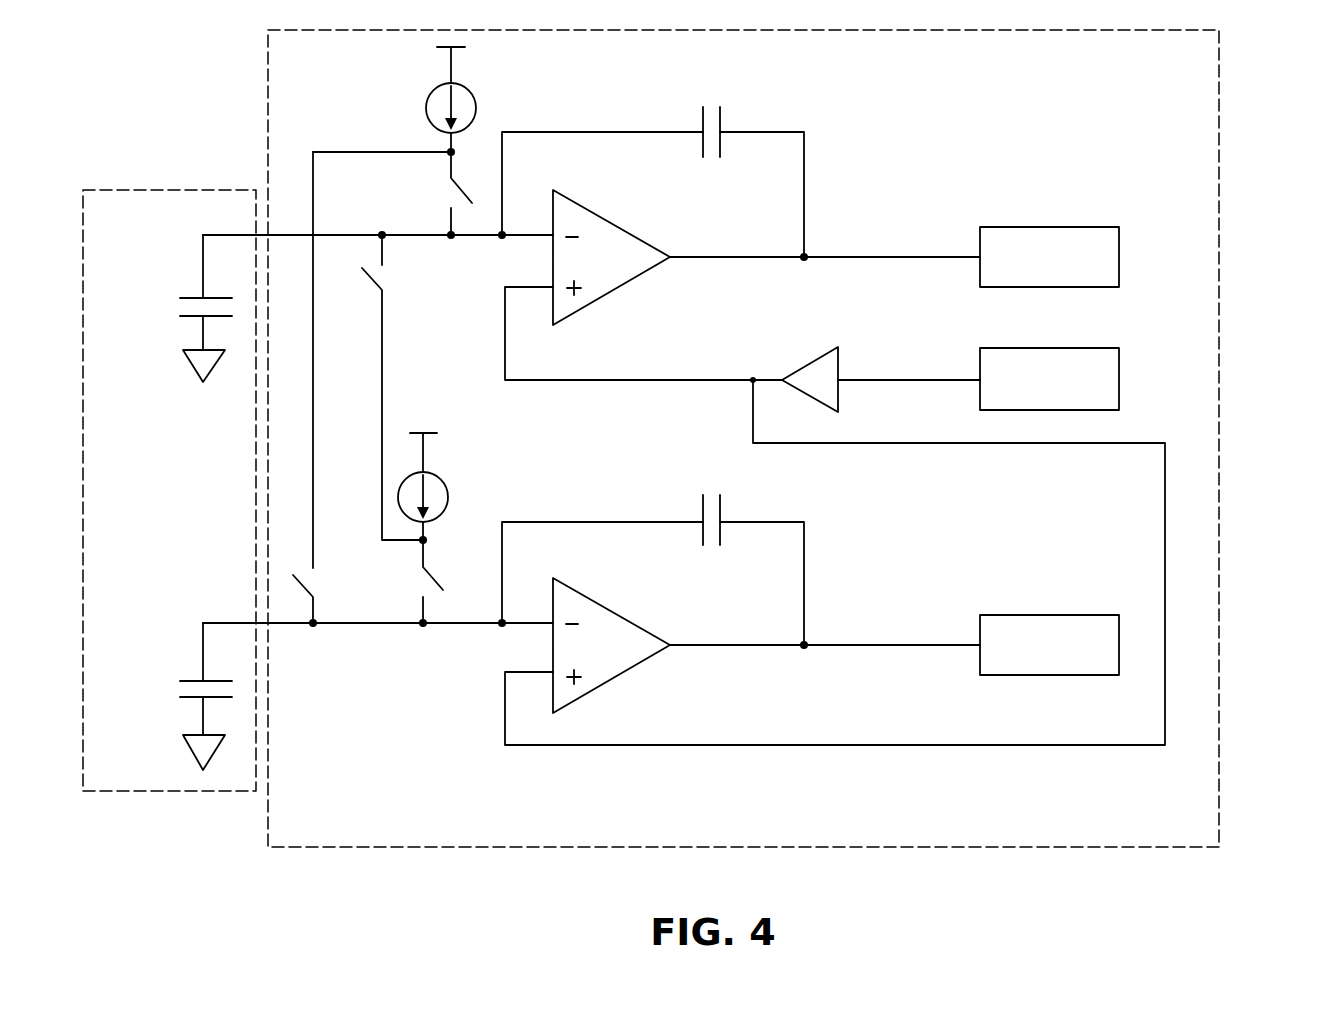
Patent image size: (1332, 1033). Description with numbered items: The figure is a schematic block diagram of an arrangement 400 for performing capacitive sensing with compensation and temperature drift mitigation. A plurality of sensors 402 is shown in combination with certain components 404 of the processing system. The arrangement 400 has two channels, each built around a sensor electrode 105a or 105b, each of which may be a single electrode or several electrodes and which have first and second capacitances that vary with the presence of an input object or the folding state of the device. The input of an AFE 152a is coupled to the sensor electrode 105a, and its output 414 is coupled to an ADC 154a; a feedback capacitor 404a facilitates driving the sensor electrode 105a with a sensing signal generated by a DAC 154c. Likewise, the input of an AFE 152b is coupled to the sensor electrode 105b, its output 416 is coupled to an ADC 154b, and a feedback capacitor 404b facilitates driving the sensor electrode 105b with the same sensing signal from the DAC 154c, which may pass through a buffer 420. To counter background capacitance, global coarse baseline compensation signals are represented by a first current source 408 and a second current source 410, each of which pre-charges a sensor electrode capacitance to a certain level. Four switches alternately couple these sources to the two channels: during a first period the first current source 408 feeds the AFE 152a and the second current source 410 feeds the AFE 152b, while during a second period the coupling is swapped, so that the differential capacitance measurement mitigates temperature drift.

The arrangement 400 is at (704, 461).
The sensors 402 is at (110, 792).
The components of processing system 404 is at (813, 848).
The feedback capacitor 404a is at (720, 115).
The feedback capacitor 404b is at (720, 505).
The current source GCBC1 408 is at (477, 110).
The current source GCBC2 410 is at (443, 478).
The output of AFE 152a 414 is at (690, 255).
The output of AFE 152b 416 is at (690, 643).
The buffer 420 is at (840, 360).
The sensor electrode 105a is at (180, 298).
The sensor electrode 105b is at (180, 681).
The AFE 152a is at (611, 257).
The AFE 152b is at (611, 645).
The ADC 154a is at (980, 267).
The ADC 154b is at (980, 655).
The DAC 154c is at (980, 395).